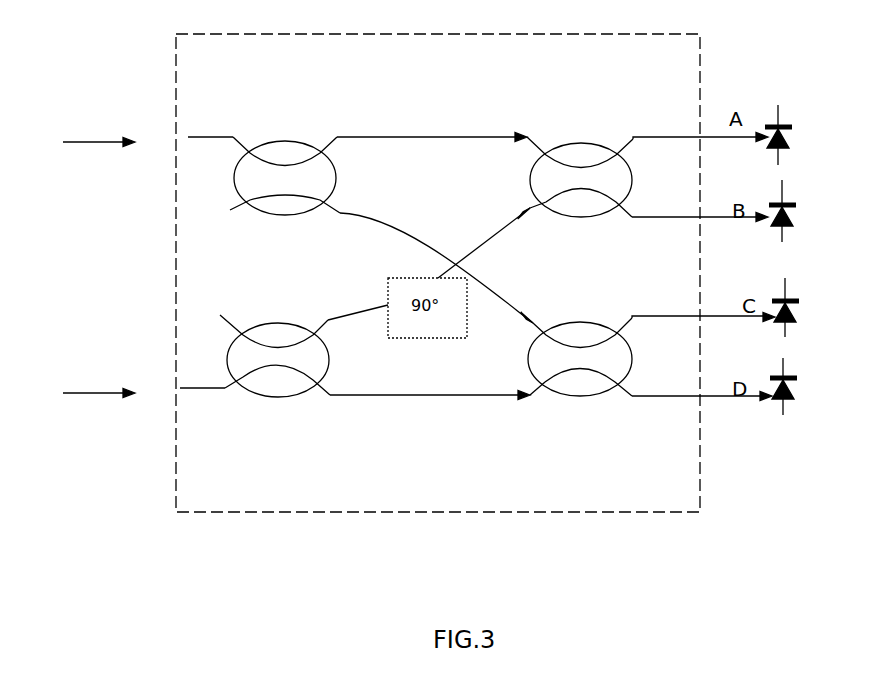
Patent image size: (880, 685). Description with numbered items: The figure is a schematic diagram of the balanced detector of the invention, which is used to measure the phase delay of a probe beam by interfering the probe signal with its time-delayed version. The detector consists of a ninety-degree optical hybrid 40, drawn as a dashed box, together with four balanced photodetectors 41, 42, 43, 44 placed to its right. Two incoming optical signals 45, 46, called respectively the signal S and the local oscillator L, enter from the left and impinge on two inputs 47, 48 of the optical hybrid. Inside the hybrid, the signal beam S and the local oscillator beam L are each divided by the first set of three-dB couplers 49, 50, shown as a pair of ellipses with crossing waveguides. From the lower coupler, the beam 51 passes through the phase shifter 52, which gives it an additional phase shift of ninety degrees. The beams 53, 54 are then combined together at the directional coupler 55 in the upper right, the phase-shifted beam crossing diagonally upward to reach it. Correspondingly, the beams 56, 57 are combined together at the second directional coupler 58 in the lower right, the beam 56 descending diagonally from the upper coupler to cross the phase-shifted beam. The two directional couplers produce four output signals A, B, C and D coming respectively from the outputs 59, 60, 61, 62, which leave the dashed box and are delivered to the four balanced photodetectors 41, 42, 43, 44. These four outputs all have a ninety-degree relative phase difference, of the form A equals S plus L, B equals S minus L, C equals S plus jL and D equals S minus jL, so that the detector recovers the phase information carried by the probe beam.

The 90-degrees optical hybrid 40 is at (438, 273).
The balanced photodetector 41 is at (807, 135).
The balanced photodetector 42 is at (810, 211).
The balanced photodetector 43 is at (815, 307).
The balanced photodetector 44 is at (812, 386).
The incoming optical signal 45 is at (74, 142).
The incoming optical signal 46 is at (74, 393).
The input of the optical hybrid 47 is at (209, 116).
The input of the optical hybrid 48 is at (202, 409).
The 3 dB coupler 49 is at (285, 160).
The 3 dB coupler 50 is at (275, 371).
The beam 51 is at (350, 298).
The phase shifter 52 is at (430, 378).
The beam 53 is at (432, 124).
The beam 54 is at (484, 234).
The directional coupler 55 is at (580, 158).
The beam 56 is at (436, 276).
The beam 57 is at (519, 411).
The directional coupler 58 is at (580, 379).
The output 59 is at (700, 123).
The output 60 is at (700, 227).
The output 61 is at (703, 331).
The output 62 is at (702, 417).